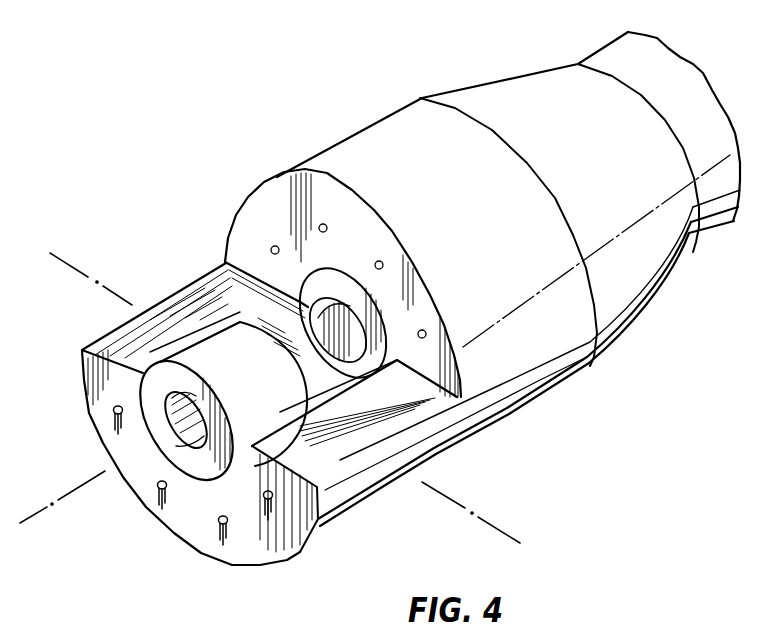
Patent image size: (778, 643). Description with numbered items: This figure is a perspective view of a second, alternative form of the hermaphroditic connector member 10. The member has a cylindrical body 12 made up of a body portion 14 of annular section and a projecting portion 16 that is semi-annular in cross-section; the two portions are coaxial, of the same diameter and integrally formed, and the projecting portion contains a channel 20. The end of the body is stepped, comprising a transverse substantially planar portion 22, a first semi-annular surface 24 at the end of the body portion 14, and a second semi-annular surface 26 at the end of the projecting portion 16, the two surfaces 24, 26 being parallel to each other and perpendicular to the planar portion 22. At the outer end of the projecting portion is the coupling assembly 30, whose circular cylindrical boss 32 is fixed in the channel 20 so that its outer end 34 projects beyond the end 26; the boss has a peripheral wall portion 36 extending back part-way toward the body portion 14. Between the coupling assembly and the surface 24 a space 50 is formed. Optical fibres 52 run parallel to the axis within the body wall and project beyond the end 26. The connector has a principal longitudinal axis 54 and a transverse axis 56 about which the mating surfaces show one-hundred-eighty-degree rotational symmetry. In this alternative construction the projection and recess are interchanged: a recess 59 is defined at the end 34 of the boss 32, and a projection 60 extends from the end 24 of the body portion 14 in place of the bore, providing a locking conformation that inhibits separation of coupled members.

The hermaphroditic connector member 10 is at (361, 98).
The cylindrical body 12 is at (506, 416).
The body portion 14 is at (565, 340).
The projecting portion 16 is at (452, 428).
The channel 20 is at (274, 323).
The transverse substantially planar portion 22 is at (340, 447).
The first semi-annular surface 24 is at (276, 185).
The second semi-annular surface 26 is at (227, 544).
The coupling assembly 30 is at (154, 354).
The circular cylindrical boss 32 is at (138, 362).
The outer end of the boss 34 is at (157, 416).
The peripheral wall portion 36 is at (212, 350).
The space 50 is at (311, 362).
The optical fibres 52 is at (273, 495).
The principal axis 54 is at (78, 489).
The transverse axis 56 is at (504, 530).
The recess 59 is at (187, 427).
The projection 60 is at (334, 306).